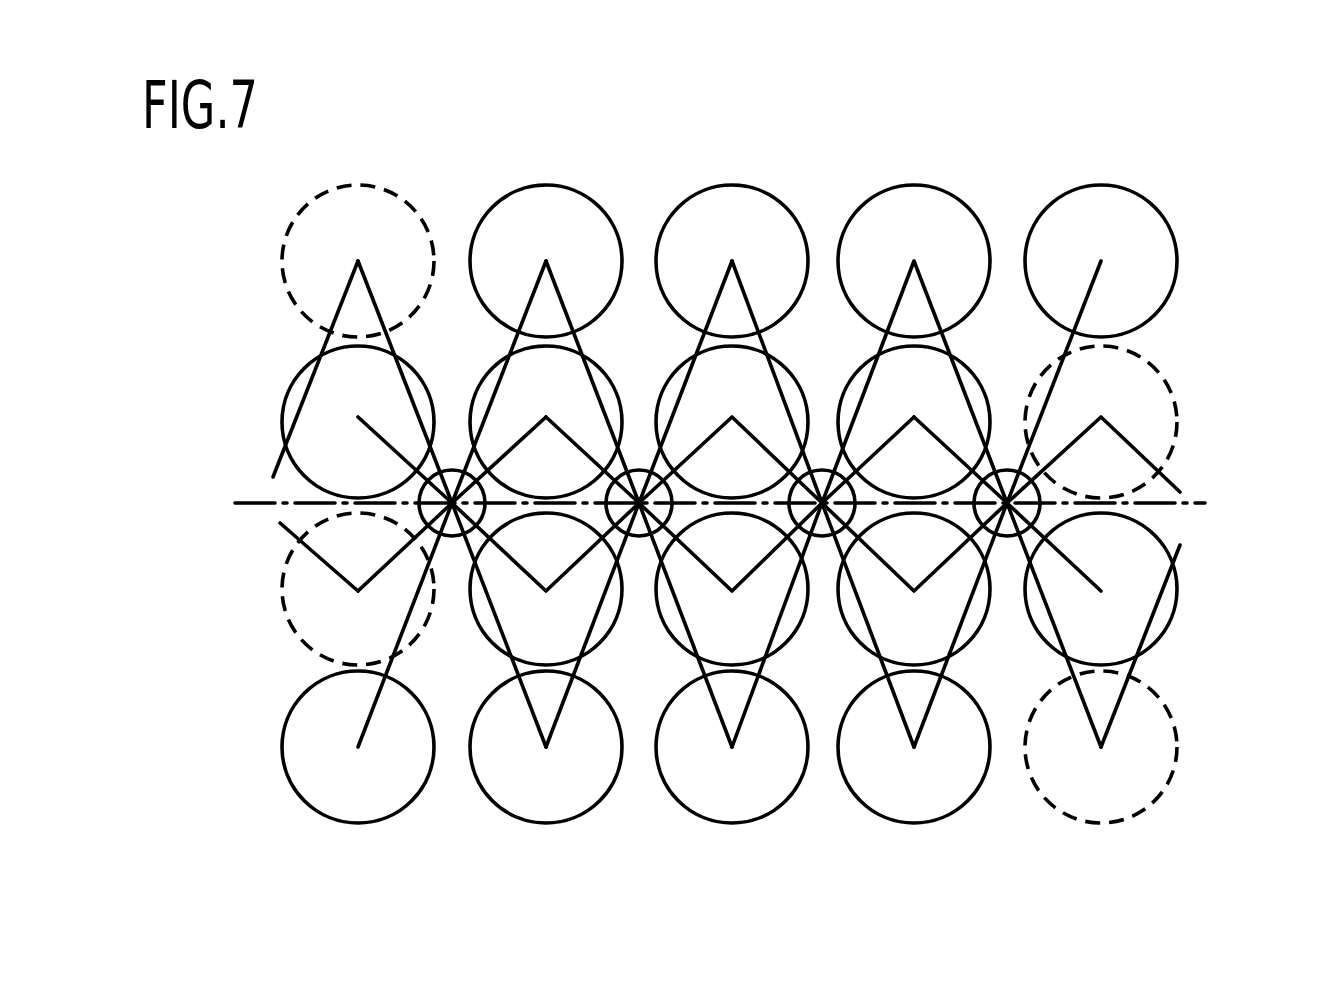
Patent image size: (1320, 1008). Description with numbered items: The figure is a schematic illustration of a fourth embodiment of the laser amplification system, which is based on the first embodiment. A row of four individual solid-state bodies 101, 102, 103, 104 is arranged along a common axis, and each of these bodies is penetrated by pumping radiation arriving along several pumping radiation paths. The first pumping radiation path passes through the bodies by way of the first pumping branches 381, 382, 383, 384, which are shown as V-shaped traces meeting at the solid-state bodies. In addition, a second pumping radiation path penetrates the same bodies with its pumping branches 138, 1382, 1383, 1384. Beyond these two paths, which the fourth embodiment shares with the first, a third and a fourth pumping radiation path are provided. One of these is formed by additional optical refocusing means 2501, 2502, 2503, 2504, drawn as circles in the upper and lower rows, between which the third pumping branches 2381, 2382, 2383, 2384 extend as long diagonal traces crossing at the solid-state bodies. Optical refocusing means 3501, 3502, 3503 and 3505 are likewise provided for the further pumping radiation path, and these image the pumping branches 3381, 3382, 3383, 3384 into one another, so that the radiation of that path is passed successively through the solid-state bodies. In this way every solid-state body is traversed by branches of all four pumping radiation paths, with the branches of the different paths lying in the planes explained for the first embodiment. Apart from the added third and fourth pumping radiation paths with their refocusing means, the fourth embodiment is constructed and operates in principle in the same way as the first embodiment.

The solid-state body 101 is at (1007, 477).
The solid-state body 102 is at (822, 472).
The solid-state body 103 is at (640, 470).
The solid-state body 104 is at (452, 473).
The first pumping branch 381 is at (1067, 451).
The first pumping branch 382 is at (872, 570).
The first pumping branch 383 is at (600, 547).
The first pumping branch 384 is at (339, 594).
The pumping branch 138 is at (307, 547).
The pumping branch 1382 is at (562, 430).
The pumping branch 1383 is at (890, 440).
The pumping branch 1384 is at (937, 439).
The third pumping branch 2381 is at (328, 350).
The third pumping branch 2382 is at (547, 663).
The third pumping branch 2383 is at (773, 313).
The third pumping branch 2384 is at (948, 667).
The pumping branch 3381 is at (1053, 613).
The pumping branch 3382 is at (775, 630).
The pumping branch 3383 is at (597, 323).
The pumping branch 3384 is at (408, 617).
The additional optical refocusing means 2501 is at (545, 822).
The additional optical refocusing means 2502 is at (720, 193).
The additional optical refocusing means 2503 is at (945, 808).
The additional optical refocusing means 2504 is at (1108, 202).
The optical refocusing means 3501 is at (925, 203).
The optical refocusing means 3502 is at (755, 808).
The optical refocusing means 3503 is at (508, 203).
The beam cross-section 3505 is at (317, 706).